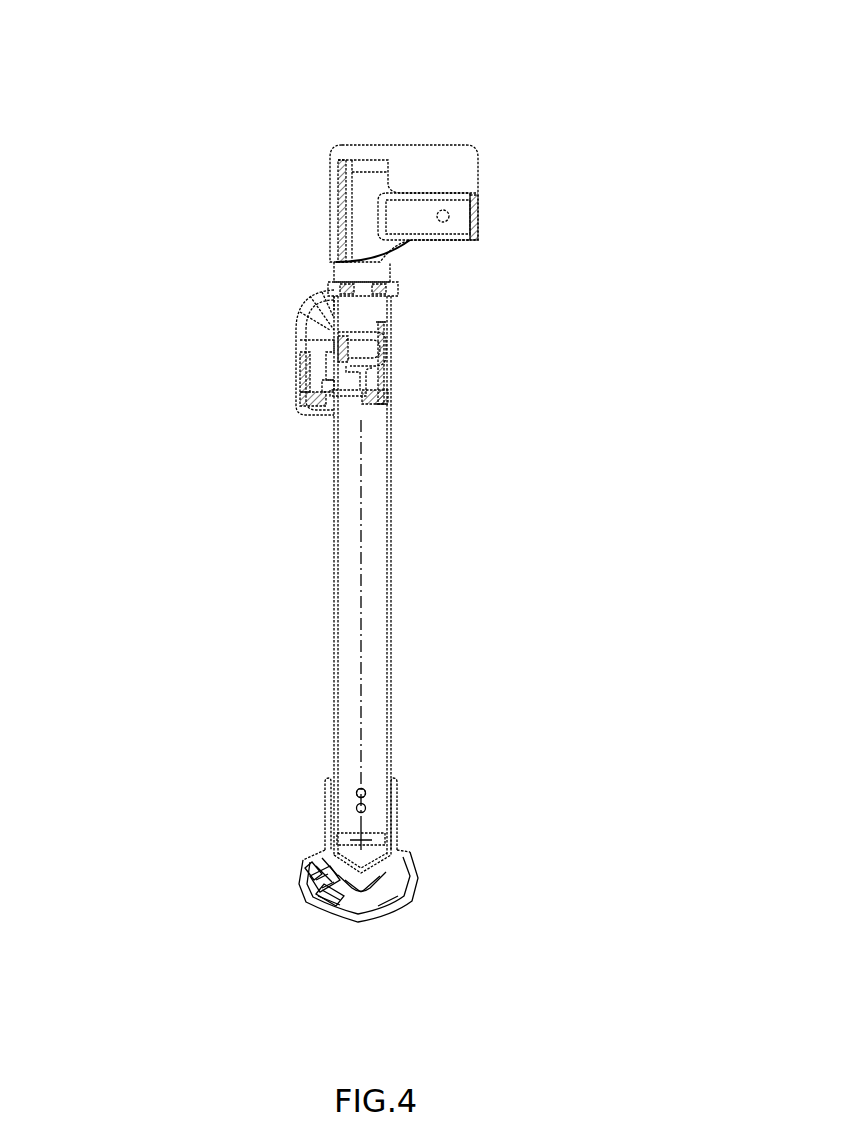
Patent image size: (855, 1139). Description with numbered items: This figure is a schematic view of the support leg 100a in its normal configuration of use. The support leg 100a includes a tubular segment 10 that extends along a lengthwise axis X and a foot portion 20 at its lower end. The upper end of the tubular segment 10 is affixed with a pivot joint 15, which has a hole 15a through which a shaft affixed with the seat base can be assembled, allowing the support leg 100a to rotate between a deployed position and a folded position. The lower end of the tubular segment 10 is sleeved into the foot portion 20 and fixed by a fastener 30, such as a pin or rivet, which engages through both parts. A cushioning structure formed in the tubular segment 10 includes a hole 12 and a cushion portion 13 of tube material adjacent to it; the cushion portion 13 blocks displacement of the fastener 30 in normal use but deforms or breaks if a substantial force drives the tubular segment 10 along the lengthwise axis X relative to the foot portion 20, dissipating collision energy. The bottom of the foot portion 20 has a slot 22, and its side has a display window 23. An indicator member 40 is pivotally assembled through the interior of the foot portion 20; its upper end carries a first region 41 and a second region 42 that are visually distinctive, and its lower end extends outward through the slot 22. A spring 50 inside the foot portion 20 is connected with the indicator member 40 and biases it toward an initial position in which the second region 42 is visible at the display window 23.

The support leg 100a is at (124, 45).
The pivot joint 15 is at (428, 170).
The hole 15a is at (446, 220).
The tubular segment 10 is at (373, 618).
The lengthwise axis X is at (360, 532).
The hole 12 is at (366, 790).
The cushion portion 13 is at (366, 792).
The fastener 30 is at (366, 808).
The foot portion 20 is at (398, 846).
The slot 22 is at (362, 924).
The display window 23 is at (304, 868).
The indicator member 40 is at (390, 905).
The first region 41 is at (338, 868).
The second region 42 is at (310, 880).
The spring 50 is at (327, 906).